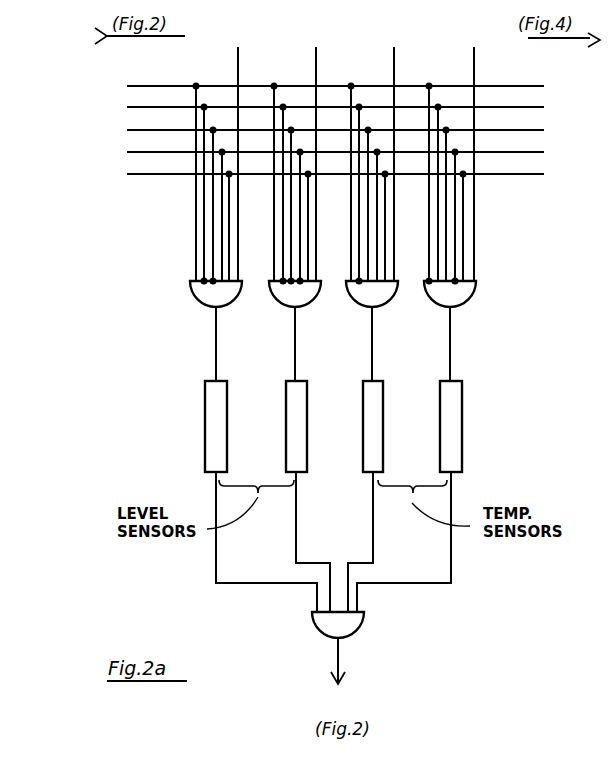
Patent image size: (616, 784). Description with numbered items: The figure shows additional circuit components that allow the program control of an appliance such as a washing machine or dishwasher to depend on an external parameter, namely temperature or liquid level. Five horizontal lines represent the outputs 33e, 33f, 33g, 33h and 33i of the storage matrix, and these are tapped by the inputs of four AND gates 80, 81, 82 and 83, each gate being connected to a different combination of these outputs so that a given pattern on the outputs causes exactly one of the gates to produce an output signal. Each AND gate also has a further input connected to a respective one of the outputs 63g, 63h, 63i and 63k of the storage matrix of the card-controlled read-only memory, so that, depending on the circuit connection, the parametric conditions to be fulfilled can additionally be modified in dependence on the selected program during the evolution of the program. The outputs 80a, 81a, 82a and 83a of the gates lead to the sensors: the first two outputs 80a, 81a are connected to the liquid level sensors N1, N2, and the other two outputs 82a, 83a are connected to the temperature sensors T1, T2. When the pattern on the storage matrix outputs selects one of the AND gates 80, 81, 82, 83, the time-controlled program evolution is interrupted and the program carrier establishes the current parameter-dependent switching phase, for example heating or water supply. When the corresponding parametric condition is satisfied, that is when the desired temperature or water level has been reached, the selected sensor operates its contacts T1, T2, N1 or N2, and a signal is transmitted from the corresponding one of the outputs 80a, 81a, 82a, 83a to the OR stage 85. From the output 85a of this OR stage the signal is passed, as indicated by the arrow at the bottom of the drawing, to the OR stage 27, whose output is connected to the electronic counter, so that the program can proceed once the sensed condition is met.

The output of the storage matrix 33e is at (327, 86).
The output of the storage matrix 33f is at (326, 107).
The output of the storage matrix 33g is at (327, 130).
The output of the storage matrix 33h is at (327, 152).
The output of the storage matrix 33i is at (324, 174).
The output of the storage matrix of the card-controlled read-only memory 63g is at (240, 147).
The output of the storage matrix of the card-controlled read-only memory 63h is at (314, 147).
The output of the storage matrix of the card-controlled read-only memory 63i is at (390, 147).
The output of the storage matrix of the card-controlled read-only memory 63k is at (471, 147).
The AND gate 80 is at (204, 298).
The AND gate 81 is at (291, 300).
The AND gate 82 is at (365, 300).
The AND gate 83 is at (445, 300).
The output of the AND gate 80a is at (214, 356).
The output of the AND gate 81a is at (294, 360).
The output of the AND gate 82a is at (371, 360).
The output of the AND gate 83a is at (449, 360).
The liquid level sensor N1 is at (225, 441).
The liquid level sensor N2 is at (306, 441).
The temperature sensor T1 is at (382, 441).
The temperature sensor T2 is at (460, 441).
The OR stage 85 is at (366, 622).
The output of the OR stage 85a is at (341, 659).
The OR gate 27 is at (338, 700).